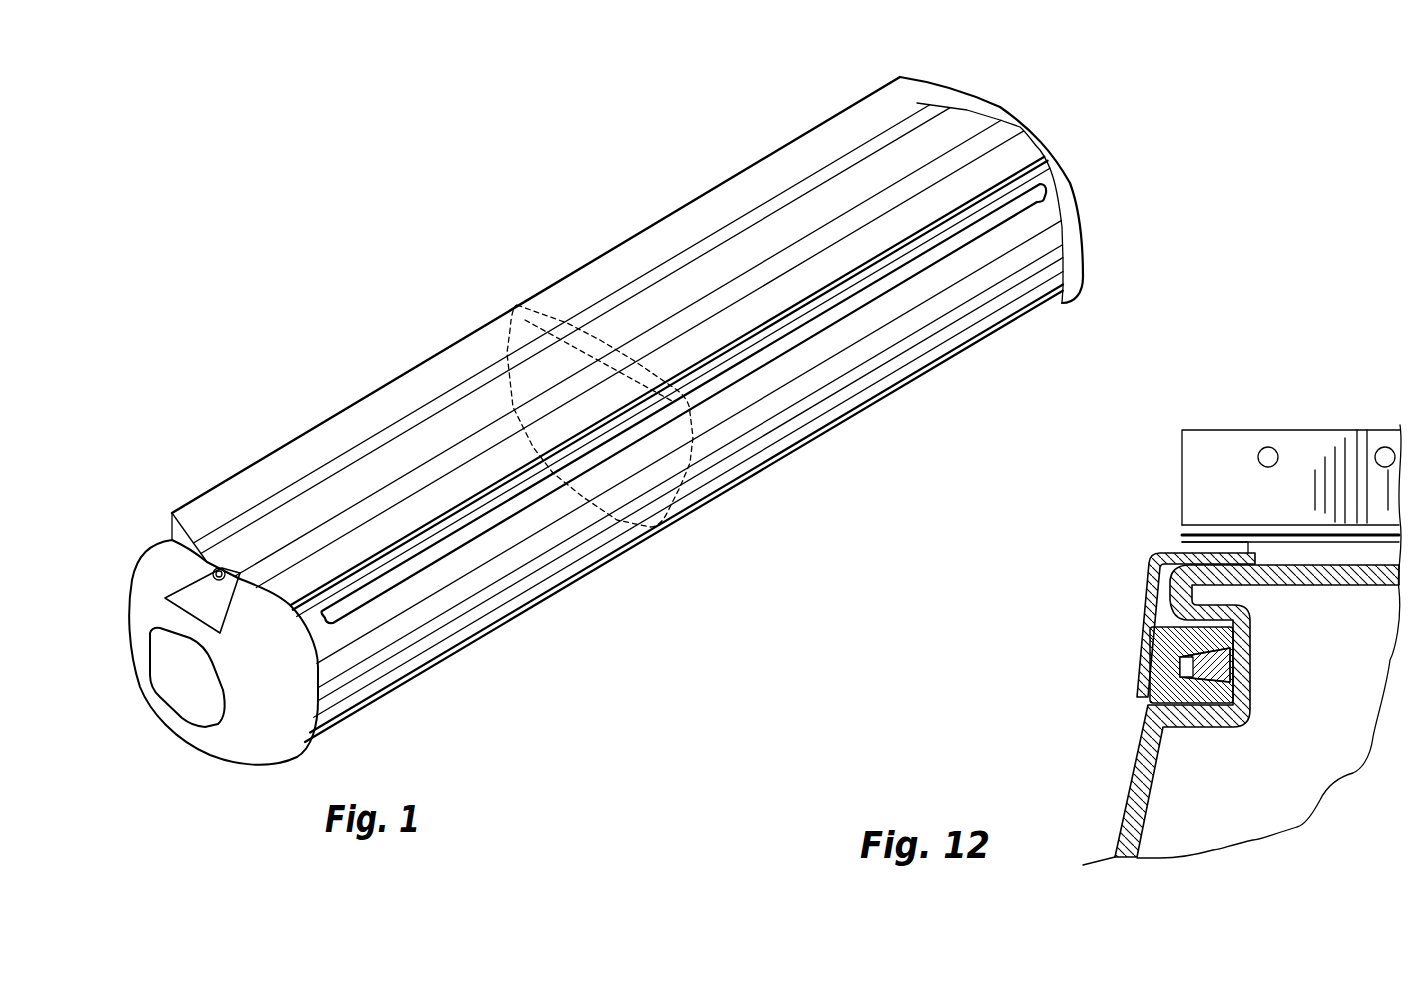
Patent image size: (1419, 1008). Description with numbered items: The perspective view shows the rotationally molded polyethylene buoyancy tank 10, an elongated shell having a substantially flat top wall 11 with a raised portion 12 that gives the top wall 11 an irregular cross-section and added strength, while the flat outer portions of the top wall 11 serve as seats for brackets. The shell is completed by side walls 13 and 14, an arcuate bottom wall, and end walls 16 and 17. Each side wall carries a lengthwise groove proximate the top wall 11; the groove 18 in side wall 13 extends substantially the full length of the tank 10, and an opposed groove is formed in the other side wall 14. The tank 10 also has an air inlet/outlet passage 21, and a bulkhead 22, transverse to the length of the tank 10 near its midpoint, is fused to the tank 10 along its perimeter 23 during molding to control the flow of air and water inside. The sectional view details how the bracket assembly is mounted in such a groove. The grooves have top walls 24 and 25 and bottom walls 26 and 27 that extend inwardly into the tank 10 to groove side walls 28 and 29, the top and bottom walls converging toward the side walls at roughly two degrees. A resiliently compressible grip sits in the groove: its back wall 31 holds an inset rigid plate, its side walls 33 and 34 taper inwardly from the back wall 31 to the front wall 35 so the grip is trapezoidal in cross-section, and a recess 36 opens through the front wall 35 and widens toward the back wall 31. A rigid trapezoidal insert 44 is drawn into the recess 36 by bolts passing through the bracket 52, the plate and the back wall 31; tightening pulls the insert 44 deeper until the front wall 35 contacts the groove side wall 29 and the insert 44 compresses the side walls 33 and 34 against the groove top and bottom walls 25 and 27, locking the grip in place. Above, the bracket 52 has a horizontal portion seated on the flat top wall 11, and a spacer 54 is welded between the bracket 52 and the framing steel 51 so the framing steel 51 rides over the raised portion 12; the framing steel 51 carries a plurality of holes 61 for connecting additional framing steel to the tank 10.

In FIG. 1, the tank 10 is at (566, 238).
In FIG. 12, the tank 10 is at (1102, 807).
In FIG. 1, the top wall 11 is at (347, 430).
In FIG. 1, the raised portion 12 is at (438, 427).
In FIG. 1, the side wall 13 is at (477, 600).
In FIG. 1, the side wall 14 is at (127, 597).
In FIG. 1, the end wall 16 is at (183, 680).
In FIG. 1, the end wall 17 is at (1083, 182).
In FIG. 1, the groove 18 is at (833, 313).
In FIG. 1, the air inlet/outlet passage 21 is at (214, 568).
In FIG. 1, the bulkhead 22 is at (630, 487).
In FIG. 1, the perimeter 23 is at (697, 480).
In FIG. 12, the top wall 24 is at (1213, 711).
In FIG. 12, the top wall 25 is at (1213, 711).
In FIG. 12, the bottom wall 26 is at (1213, 711).
In FIG. 12, the bottom wall 27 is at (1213, 711).
In FIG. 12, the side wall 28 is at (1213, 711).
In FIG. 12, the side wall 29 is at (1213, 711).
In FIG. 12, the back wall 31 is at (1148, 660).
In FIG. 12, the side wall 33 is at (1159, 654).
In FIG. 12, the side wall 34 is at (1150, 710).
In FIG. 12, the front wall 35 is at (1213, 711).
In FIG. 12, the recess 36 is at (1193, 667).
In FIG. 12, the rigid insert 44 is at (1213, 711).
In FIG. 12, the framing steel 51 is at (1291, 442).
In FIG. 12, the bracket 52 is at (1159, 635).
In FIG. 12, the spacer 54 is at (1183, 547).
In FIG. 12, the holes 61 is at (1270, 448).